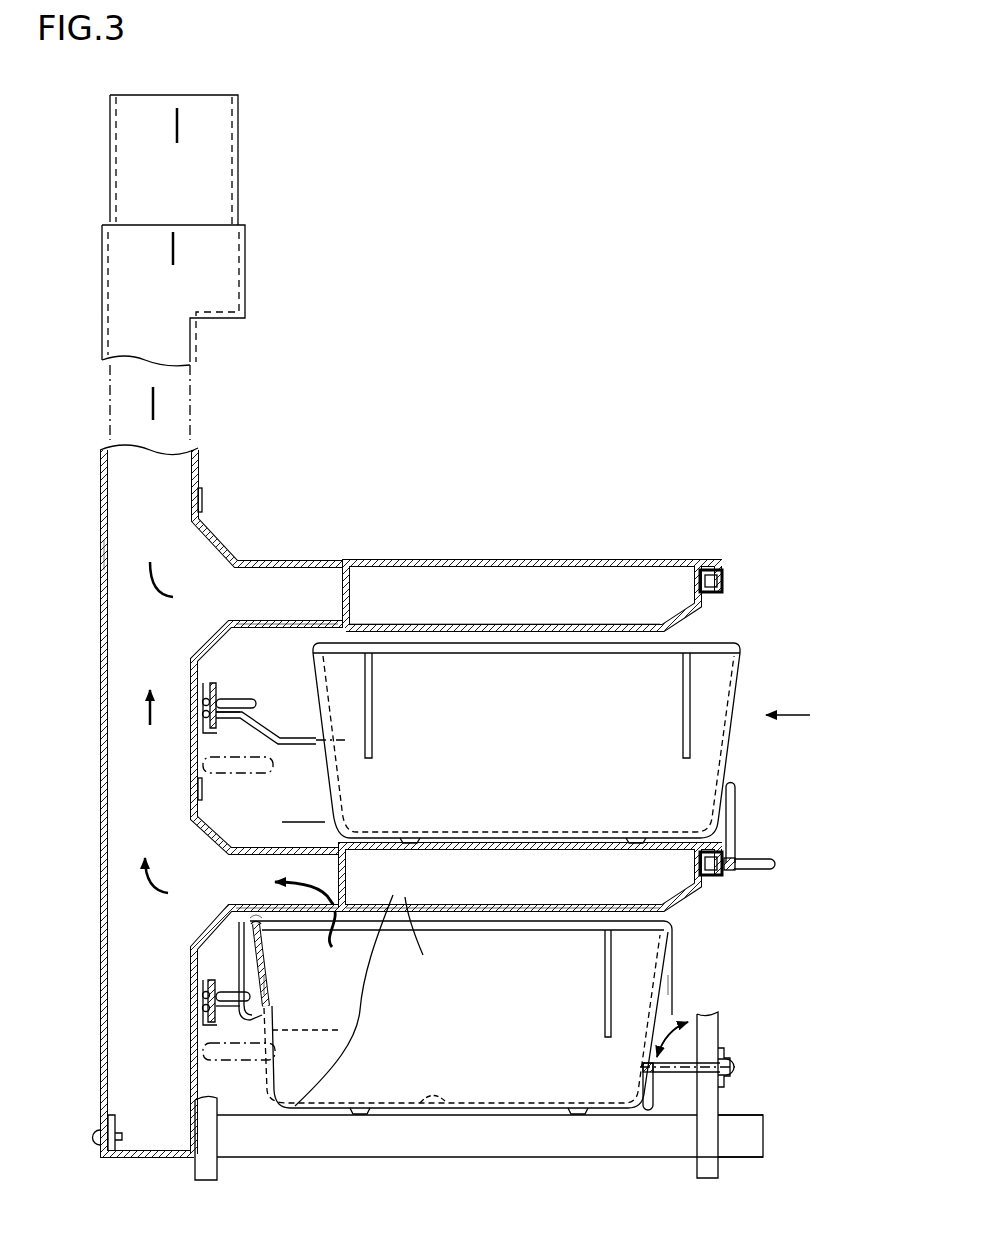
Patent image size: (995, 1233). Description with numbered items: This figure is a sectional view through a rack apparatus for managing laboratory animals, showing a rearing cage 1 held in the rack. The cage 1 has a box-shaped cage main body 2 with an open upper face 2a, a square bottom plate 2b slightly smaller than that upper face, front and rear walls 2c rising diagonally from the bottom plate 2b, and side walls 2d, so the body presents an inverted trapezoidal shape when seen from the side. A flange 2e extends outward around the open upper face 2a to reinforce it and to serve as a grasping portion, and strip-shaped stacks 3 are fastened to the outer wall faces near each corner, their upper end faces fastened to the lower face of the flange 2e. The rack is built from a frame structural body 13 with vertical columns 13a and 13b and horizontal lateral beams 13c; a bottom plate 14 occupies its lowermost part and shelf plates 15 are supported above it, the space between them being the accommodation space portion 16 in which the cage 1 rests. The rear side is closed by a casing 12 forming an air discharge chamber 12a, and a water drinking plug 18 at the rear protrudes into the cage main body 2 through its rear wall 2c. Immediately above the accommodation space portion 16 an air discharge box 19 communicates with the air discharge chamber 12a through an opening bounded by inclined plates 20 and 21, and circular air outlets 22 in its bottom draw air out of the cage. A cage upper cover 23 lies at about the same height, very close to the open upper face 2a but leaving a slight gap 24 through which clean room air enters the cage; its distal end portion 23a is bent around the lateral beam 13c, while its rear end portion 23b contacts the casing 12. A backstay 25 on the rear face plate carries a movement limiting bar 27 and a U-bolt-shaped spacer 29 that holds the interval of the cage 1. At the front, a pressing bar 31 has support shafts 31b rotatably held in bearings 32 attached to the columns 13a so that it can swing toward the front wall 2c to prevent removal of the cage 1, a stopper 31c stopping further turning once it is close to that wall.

The rearing cage 1 is at (742, 693).
The cage main body 2 is at (697, 768).
The open upper face 2a is at (422, 941).
The bottom plate 2b is at (452, 1118).
The front and rear walls 2c is at (668, 985).
The side walls 2d is at (355, 978).
The flange 2e is at (257, 918).
The stack 3 is at (313, 672).
The casing 12 is at (100, 747).
The air discharge chamber 12a is at (125, 557).
The frame structural body 13 is at (713, 1105).
The column 13a is at (706, 1145).
The column 13b is at (215, 1170).
The lateral beam 13c is at (710, 593).
The bottom plate 14 is at (345, 1135).
The shelf plate 15 is at (550, 559).
The accommodation space portion 16 is at (700, 632).
The water drinking plug 18 is at (278, 770).
The air discharge box 19 is at (258, 600).
The inclined plate 20 is at (210, 842).
The inclined plate 21 is at (206, 934).
The air outlet 22 is at (311, 622).
The cage upper cover 23 is at (462, 621).
The distal end portion 23a is at (723, 850).
The rear end portion 23b is at (205, 500).
The gap 24 is at (540, 643).
The backstay 25 is at (212, 688).
The movement limiting bar 27 is at (242, 704).
The spacer 29 is at (285, 738).
The pressing bar 31 is at (665, 1074).
The support shaft 31b is at (733, 1066).
The stopper 31c is at (648, 1112).
The bearing 32 is at (722, 1050).